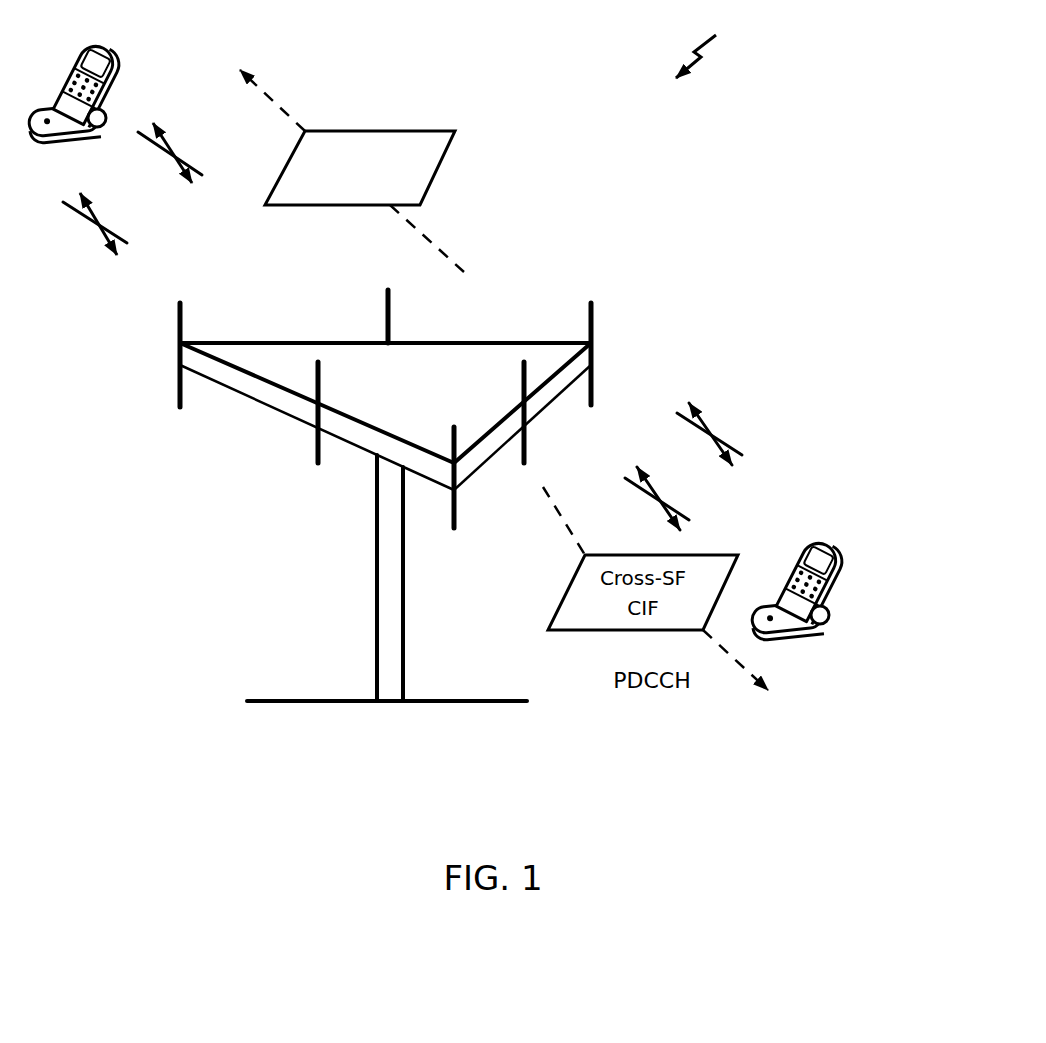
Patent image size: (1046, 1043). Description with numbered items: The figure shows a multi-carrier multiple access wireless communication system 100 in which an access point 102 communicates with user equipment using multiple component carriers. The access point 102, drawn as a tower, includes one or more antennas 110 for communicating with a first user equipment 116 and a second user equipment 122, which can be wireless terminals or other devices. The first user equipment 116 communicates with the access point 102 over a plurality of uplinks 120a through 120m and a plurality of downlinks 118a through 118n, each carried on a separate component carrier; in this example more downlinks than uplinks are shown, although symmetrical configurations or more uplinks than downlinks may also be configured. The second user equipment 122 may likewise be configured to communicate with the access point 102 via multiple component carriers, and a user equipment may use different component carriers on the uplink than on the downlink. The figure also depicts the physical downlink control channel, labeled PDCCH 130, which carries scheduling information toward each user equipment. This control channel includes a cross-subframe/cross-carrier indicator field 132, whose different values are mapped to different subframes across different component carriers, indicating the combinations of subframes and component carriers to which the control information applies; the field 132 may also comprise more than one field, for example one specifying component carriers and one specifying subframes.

The multi-carrier wireless communication system 100 is at (716, 45).
The access point 102 is at (390, 703).
The antennas 110 is at (318, 463).
The first user equipment 116 is at (116, 47).
The downlink 118a is at (183, 149).
The downlink 118n is at (116, 233).
The uplink 120m is at (145, 145).
The uplink 120a is at (77, 223).
The second user equipment 122 is at (840, 545).
The PDCCH transmission 130 is at (413, 60).
The cross-subframe/cross-carrier indicator field 132 is at (422, 130).